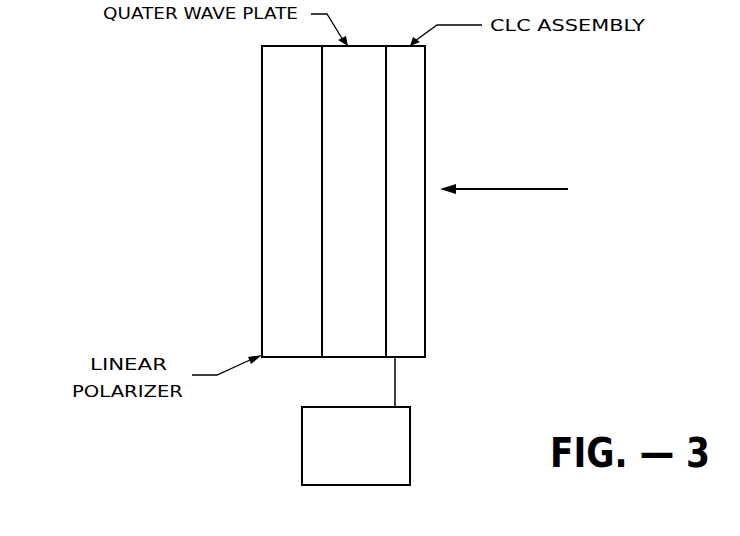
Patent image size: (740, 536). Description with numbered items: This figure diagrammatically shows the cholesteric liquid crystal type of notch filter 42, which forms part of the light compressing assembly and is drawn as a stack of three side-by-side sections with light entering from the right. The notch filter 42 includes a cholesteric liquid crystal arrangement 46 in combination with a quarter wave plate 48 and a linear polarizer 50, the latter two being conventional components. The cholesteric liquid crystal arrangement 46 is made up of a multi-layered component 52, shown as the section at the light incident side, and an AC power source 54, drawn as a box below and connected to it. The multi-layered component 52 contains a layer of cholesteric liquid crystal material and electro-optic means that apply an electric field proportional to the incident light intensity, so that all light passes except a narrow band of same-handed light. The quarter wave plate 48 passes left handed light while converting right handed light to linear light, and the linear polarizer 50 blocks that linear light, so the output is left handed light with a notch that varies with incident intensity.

The cholesteric liquid crystal type notch filter 42 is at (541, 121).
The cholesteric liquid crystal arrangement 46 is at (434, 277).
The quarter wave plate 48 is at (333, 141).
The linear polarizer 50 is at (272, 234).
The multi-layered component 52 is at (415, 332).
The AC power source 54 is at (410, 438).